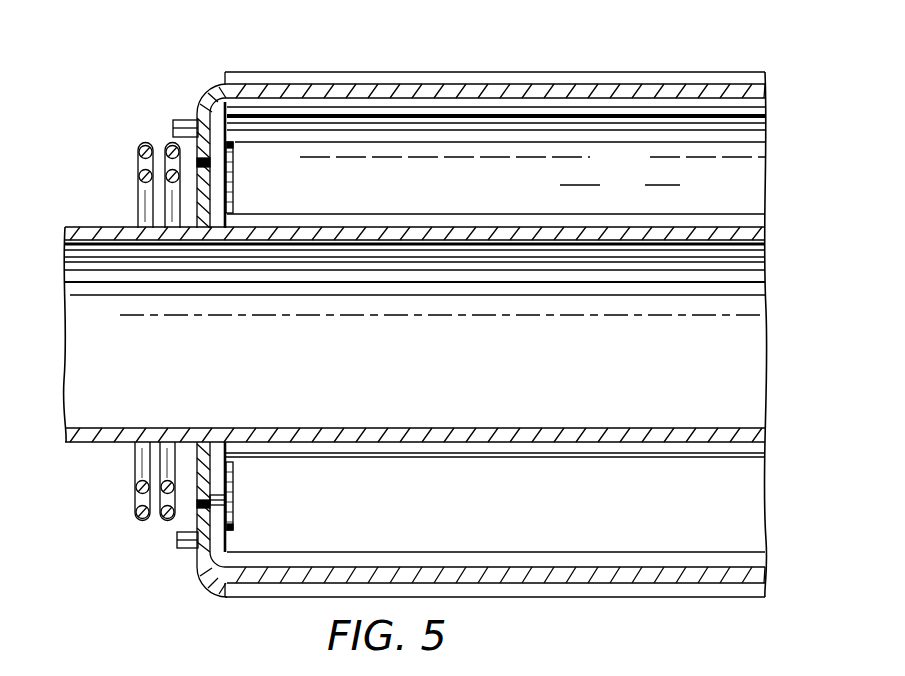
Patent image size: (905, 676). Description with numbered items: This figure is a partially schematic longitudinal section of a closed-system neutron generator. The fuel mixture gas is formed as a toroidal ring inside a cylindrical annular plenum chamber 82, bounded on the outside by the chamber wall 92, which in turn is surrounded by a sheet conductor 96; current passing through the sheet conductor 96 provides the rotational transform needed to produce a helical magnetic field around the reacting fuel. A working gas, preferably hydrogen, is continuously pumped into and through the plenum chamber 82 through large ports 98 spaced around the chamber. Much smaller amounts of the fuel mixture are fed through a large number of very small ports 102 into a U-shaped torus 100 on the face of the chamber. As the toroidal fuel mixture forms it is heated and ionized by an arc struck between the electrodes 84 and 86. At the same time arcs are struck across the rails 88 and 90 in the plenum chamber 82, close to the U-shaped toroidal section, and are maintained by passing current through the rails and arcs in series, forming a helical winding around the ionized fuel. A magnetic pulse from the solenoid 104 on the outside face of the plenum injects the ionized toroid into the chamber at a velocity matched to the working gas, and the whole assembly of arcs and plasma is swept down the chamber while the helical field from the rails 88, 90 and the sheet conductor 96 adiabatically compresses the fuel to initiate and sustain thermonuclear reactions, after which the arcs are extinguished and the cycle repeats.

The cylindrical annular plenum chamber 82 is at (624, 169).
The electrode 84 is at (236, 190).
The electrode 86 is at (235, 145).
The rail electrode 88 is at (745, 117).
The rail electrode 90 is at (690, 213).
The chamber wall 92 is at (740, 84).
The sheet conductor 96 is at (570, 71).
The large port 98 is at (189, 121).
The U-shaped torus 100 is at (226, 498).
The small port 102 is at (200, 162).
The solenoid 104 is at (137, 158).